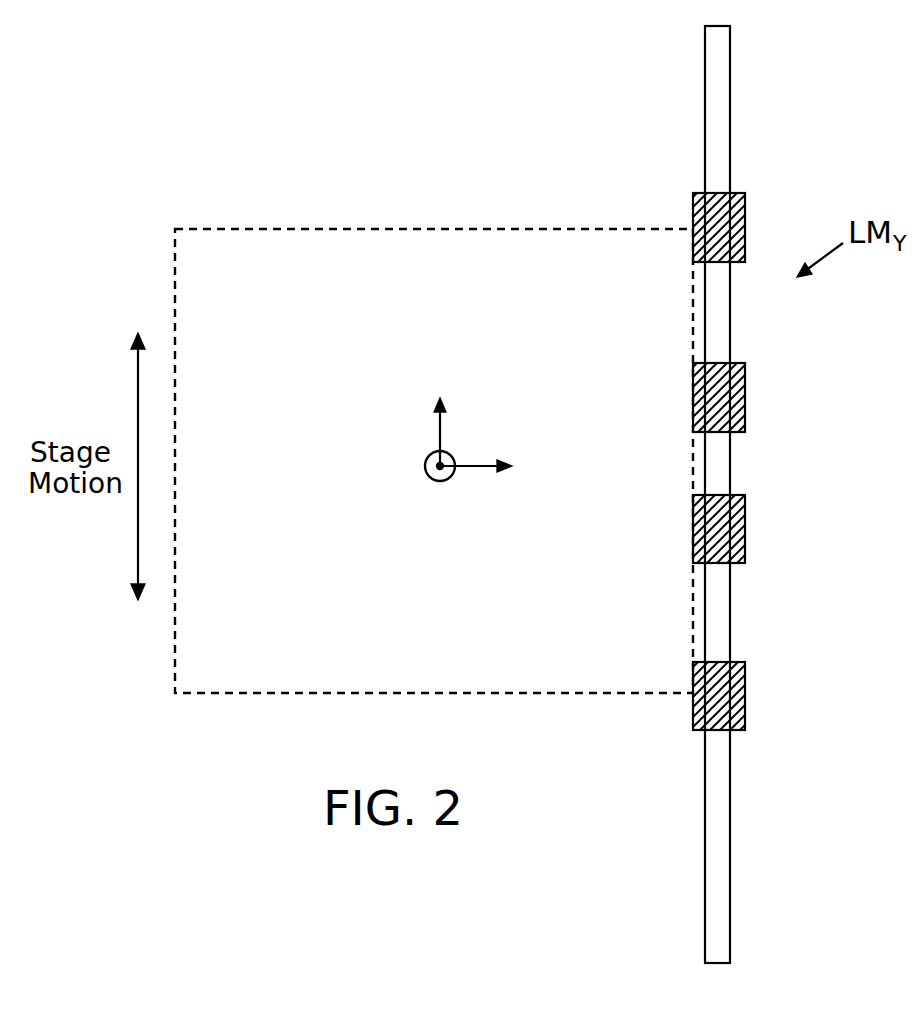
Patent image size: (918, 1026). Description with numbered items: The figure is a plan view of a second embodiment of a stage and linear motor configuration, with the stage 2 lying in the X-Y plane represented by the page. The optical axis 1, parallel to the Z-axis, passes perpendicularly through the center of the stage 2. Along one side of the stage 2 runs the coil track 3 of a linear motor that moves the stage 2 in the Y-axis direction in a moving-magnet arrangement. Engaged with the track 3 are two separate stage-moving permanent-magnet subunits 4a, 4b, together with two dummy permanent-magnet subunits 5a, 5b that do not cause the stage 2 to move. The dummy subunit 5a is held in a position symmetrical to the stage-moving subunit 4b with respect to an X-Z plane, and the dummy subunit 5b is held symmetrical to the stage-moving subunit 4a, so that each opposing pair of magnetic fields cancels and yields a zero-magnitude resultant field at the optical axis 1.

The optical axis 1 is at (448, 453).
The stage 2 is at (400, 228).
The coil track 3 is at (720, 92).
The stage-moving permanent-magnet subunit 4a is at (733, 218).
The stage-moving permanent-magnet subunit 4b is at (733, 528).
The dummy permanent-magnet subunit 5a is at (733, 388).
The dummy permanent-magnet subunit 5b is at (733, 690).